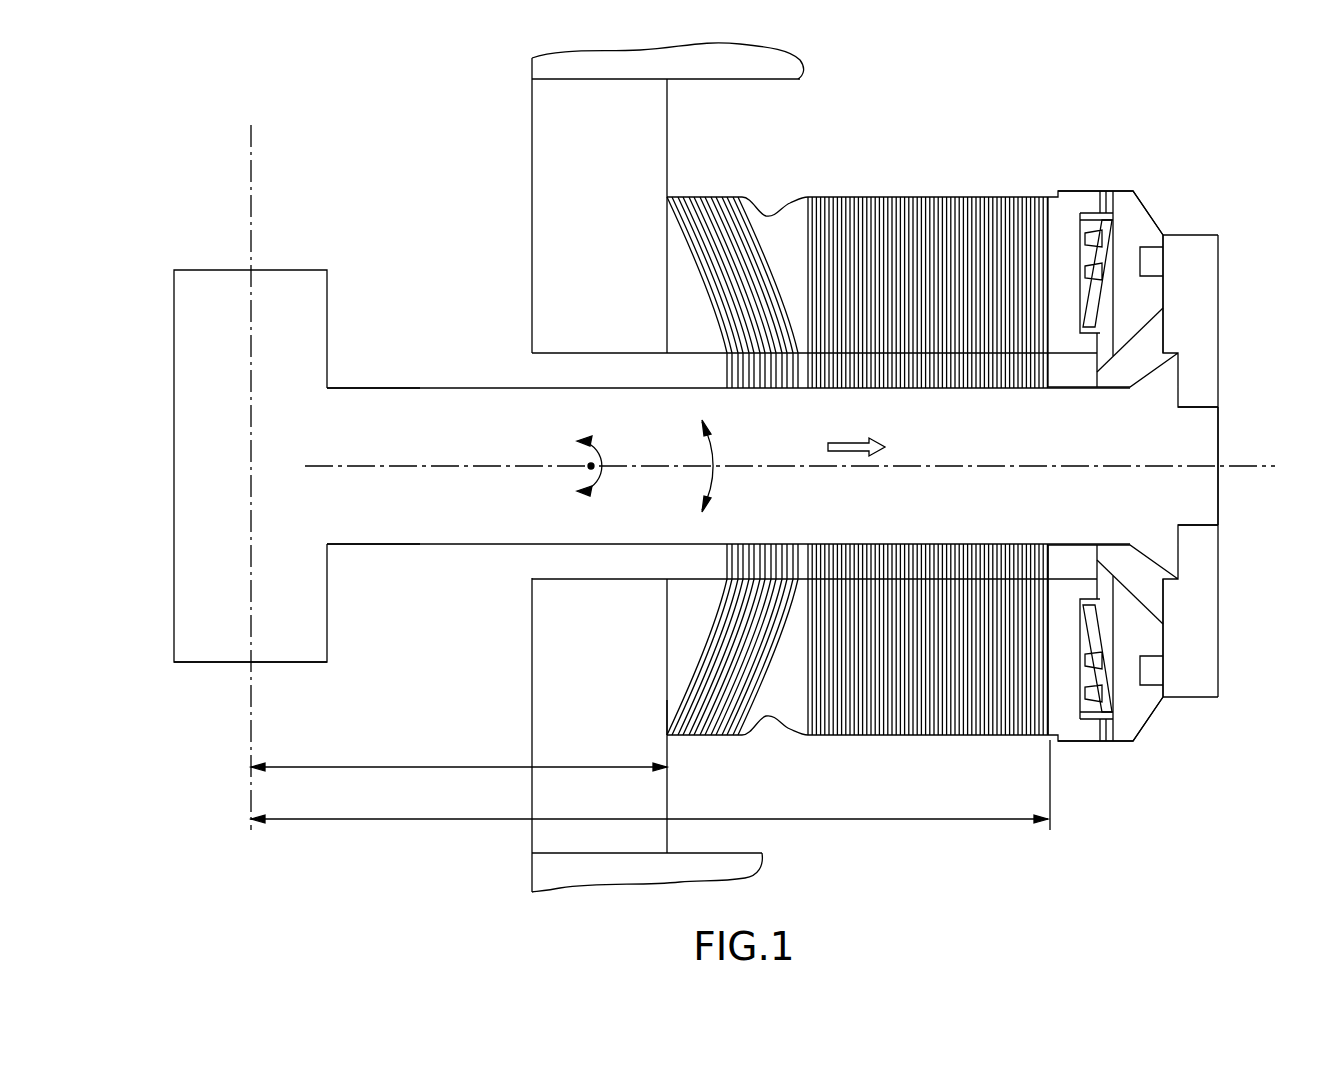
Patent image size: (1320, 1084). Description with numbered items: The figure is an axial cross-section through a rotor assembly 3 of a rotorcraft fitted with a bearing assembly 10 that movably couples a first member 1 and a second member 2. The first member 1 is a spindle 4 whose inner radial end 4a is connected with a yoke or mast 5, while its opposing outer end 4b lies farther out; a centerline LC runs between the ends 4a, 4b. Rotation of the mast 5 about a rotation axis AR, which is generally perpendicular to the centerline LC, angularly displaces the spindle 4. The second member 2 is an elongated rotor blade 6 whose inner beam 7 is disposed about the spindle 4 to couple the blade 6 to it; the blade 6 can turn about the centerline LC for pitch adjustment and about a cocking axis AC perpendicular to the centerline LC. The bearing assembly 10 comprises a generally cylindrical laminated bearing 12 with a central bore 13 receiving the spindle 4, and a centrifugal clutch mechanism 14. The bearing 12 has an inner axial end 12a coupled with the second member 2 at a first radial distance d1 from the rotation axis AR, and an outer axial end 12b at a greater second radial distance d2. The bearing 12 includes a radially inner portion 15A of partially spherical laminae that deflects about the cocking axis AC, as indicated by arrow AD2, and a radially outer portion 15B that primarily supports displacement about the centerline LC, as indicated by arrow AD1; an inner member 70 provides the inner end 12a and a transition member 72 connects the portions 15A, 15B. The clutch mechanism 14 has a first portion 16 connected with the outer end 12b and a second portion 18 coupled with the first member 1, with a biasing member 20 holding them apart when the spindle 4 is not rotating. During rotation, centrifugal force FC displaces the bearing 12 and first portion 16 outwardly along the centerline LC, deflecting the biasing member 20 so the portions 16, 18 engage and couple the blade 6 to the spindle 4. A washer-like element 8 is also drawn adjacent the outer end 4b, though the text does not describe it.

The first member 1 is at (1243, 312).
The second member 2 is at (485, 106).
The rotor assembly 3 is at (177, 740).
The spindle 4 is at (488, 393).
The inner radial end 4a is at (341, 411).
The outer end 4b is at (1197, 420).
The yoke or mast 5 is at (176, 308).
The rotor blade 6 is at (743, 866).
The inner beam 7 is at (541, 667).
The washer 8 is at (1200, 268).
The bearing assembly 10 is at (1057, 133).
The laminated bearing 12 is at (941, 171).
The inner axial end 12a is at (667, 686).
The outer axial end 12b is at (1062, 728).
The central bore 13 is at (690, 578).
The centrifugal clutch mechanism 14 is at (1146, 165).
The first, radially inner portion 15A is at (703, 198).
The second, radially outer portion 15B is at (879, 193).
The first portion 16 is at (1082, 198).
The second portion 18 is at (1141, 211).
The biasing member 20 is at (1107, 248).
The inner member 70 is at (683, 292).
The transition member 72 is at (746, 228).
The rotation axis AR is at (252, 149).
The centerline LC is at (1262, 467).
The cocking axis AC is at (603, 453).
The arrow AD1 is at (713, 456).
The arrow AD2 is at (606, 490).
The centrifugal force FC is at (856, 437).
The first radial distance d1 is at (459, 754).
The second radial distance d2 is at (650, 785).